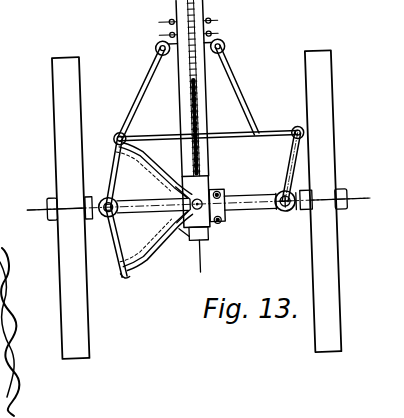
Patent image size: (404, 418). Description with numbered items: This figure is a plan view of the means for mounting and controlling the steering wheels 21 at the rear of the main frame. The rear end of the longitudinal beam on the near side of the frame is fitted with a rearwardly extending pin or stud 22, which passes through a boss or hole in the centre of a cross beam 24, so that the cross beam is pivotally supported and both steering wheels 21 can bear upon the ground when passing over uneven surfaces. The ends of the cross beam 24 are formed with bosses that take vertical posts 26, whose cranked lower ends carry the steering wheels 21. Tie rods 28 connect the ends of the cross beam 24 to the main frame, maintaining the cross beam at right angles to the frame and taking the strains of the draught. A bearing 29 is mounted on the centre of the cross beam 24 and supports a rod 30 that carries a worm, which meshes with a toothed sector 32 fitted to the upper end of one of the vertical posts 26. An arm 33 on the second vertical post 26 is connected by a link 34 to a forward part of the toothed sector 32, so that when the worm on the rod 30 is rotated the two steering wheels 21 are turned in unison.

The steering wheels 21 is at (63, 108).
The pin or stud 22 is at (207, 242).
The cross beam 24 is at (247, 209).
The vertical posts 26 is at (95, 197).
The tie rods 28 is at (152, 98).
The bearing 29 is at (210, 178).
The rod 30 is at (197, 128).
The toothed sector 32 is at (158, 167).
The arm 33 is at (300, 162).
The link 34 is at (268, 133).